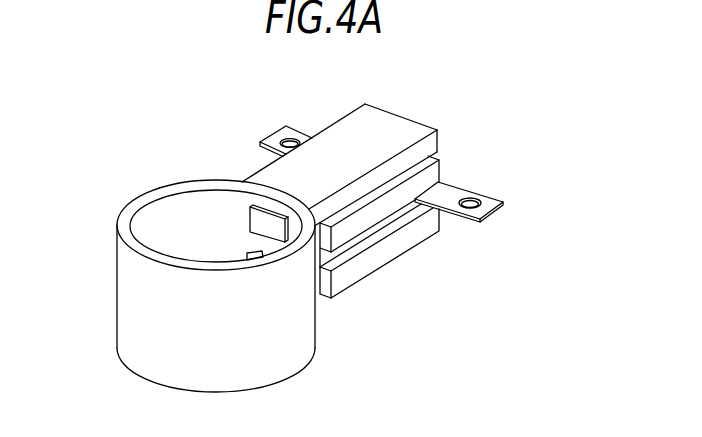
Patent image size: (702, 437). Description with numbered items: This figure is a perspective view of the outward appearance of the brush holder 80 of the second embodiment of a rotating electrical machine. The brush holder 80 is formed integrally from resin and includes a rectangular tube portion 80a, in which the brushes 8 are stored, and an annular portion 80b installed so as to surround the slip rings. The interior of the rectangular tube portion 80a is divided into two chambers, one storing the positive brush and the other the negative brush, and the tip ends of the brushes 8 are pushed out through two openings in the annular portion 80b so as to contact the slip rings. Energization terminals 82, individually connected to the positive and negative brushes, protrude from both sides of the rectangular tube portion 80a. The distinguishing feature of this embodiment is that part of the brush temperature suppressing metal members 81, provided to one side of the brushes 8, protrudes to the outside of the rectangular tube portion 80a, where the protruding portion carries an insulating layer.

The brushes 8 is at (253, 257).
The brush holder 80 is at (179, 135).
The rectangular tube portion 80a is at (392, 124).
The annular portion 80b is at (305, 349).
The brush temperature suppressing metal member 81 is at (375, 213).
The energization terminals 82 is at (488, 200).